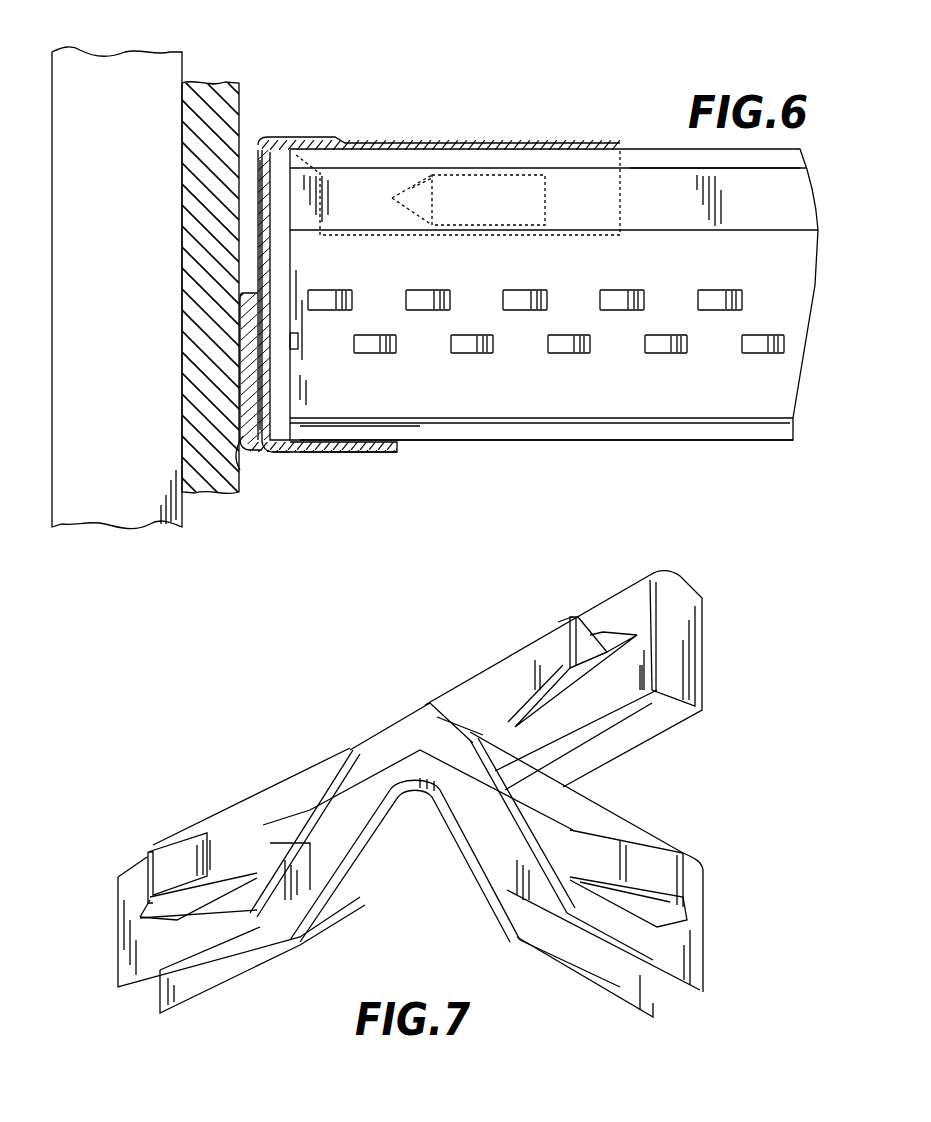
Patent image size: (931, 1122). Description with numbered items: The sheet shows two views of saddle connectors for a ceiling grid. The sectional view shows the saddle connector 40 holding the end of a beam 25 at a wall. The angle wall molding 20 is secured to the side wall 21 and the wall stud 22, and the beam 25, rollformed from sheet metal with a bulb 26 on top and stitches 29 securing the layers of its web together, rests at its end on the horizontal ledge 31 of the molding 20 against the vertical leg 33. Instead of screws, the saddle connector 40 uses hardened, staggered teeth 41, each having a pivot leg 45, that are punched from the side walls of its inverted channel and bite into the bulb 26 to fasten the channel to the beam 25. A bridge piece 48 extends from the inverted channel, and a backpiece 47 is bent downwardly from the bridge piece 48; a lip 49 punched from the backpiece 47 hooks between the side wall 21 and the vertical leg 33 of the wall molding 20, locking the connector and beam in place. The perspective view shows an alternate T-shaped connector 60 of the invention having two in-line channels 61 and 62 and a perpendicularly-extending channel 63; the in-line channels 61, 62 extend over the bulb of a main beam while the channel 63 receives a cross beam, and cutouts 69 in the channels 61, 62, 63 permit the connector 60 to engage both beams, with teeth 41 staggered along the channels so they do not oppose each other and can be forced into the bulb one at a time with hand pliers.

In FIG. 6, the angle wall molding 20 is at (330, 453).
In FIG. 6, the side wall 21 is at (210, 84).
In FIG. 6, the wall stud 22 is at (124, 72).
In FIG. 6, the beam 25 is at (740, 443).
In FIG. 6, the bulb 26 is at (640, 178).
In FIG. 6, the stitches 29 is at (755, 346).
In FIG. 6, the horizontal ledge 31 is at (292, 455).
In FIG. 6, the vertical leg 33 is at (252, 452).
In FIG. 6, the saddle connector 40 is at (410, 143).
In FIG. 6, the teeth 41 is at (470, 232).
In FIG. 7, the teeth 41 is at (562, 642).
In FIG. 6, the pivot leg 45 is at (504, 166).
In FIG. 6, the backpiece 47 is at (265, 200).
In FIG. 6, the bridge piece 48 is at (263, 138).
In FIG. 6, the lip 49 is at (256, 380).
In FIG. 7, the connector 60 is at (316, 762).
In FIG. 7, the in-line channel 61 is at (496, 672).
In FIG. 7, the in-line channel 62 is at (268, 802).
In FIG. 7, the perpendicularly-extending channel 63 is at (590, 817).
In FIG. 7, the cutouts 69 is at (360, 835).